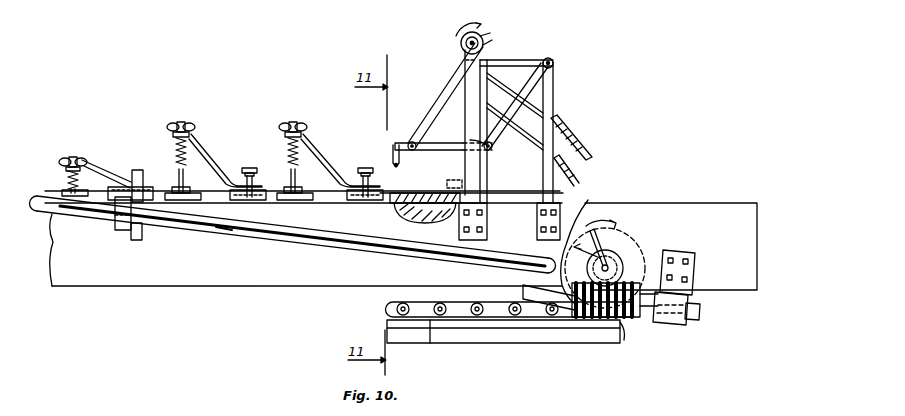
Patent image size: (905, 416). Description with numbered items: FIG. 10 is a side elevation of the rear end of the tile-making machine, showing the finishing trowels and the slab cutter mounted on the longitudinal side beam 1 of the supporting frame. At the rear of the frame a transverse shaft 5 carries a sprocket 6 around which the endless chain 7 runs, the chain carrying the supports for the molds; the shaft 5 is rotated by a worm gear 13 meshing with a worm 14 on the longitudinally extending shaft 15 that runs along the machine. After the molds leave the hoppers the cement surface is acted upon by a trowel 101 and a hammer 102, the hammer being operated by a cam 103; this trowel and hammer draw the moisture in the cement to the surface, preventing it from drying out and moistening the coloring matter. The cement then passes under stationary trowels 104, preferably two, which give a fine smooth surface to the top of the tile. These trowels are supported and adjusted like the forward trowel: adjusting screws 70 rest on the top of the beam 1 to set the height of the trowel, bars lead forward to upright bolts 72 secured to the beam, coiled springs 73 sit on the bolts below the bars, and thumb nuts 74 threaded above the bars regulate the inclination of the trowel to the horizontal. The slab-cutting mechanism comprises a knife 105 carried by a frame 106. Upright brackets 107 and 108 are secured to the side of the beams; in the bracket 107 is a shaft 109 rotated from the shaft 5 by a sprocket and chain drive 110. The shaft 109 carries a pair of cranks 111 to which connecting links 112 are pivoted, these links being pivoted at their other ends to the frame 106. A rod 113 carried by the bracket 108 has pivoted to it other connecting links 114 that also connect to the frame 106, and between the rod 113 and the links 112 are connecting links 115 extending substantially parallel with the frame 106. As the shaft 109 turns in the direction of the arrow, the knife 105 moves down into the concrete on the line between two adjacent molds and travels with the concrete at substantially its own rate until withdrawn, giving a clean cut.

The longitudinal side beam 1 is at (185, 278).
The rear transverse shaft 5 is at (615, 262).
The sprocket 6 is at (617, 246).
The endless chain 7 is at (384, 310).
The worm gear 13 is at (622, 268).
The worm 14 is at (632, 322).
The longitudinally extending shaft 15 is at (229, 233).
The adjusting screw 70 is at (251, 169).
The upright bolt 72 is at (296, 122).
The coiled spring 73 is at (299, 159).
The thumb nut 74 is at (308, 129).
The trowel 101 is at (152, 188).
The hammer 102 is at (135, 169).
The operating cam 103 is at (118, 229).
The stationary trowel 104 is at (263, 196).
The knife 105 is at (392, 153).
The frame 106 is at (441, 150).
The upright bracket 107 is at (477, 166).
The upright bracket 108 is at (555, 100).
The shaft 109 is at (463, 49).
The sprocket and chain drive 110 is at (587, 155).
The crank 111 is at (486, 40).
The connecting link 112 is at (431, 109).
The rod 113 is at (556, 64).
The connecting link 114 is at (502, 130).
The connecting link 115 is at (523, 60).